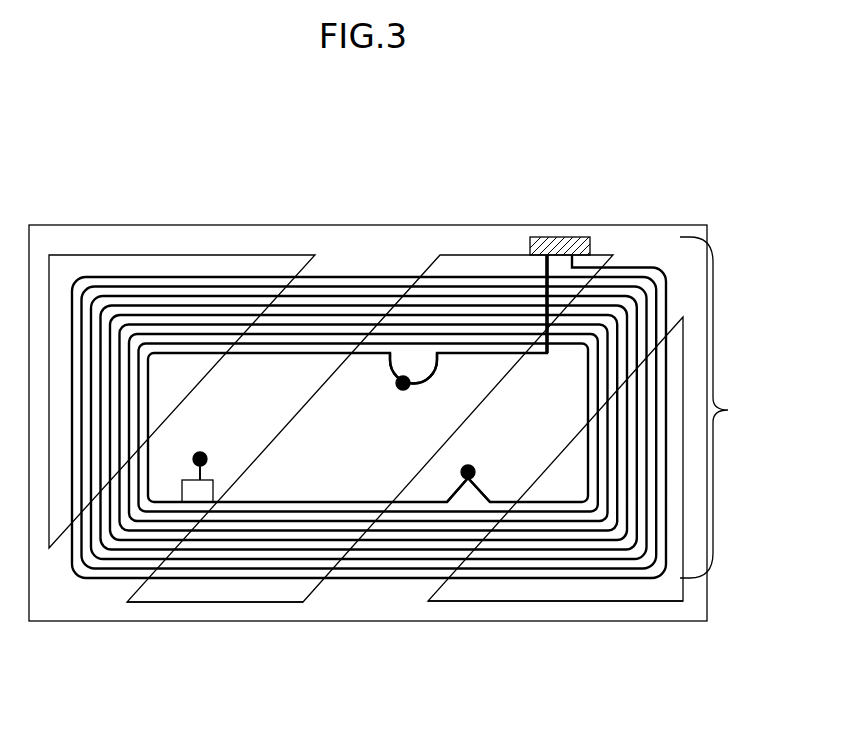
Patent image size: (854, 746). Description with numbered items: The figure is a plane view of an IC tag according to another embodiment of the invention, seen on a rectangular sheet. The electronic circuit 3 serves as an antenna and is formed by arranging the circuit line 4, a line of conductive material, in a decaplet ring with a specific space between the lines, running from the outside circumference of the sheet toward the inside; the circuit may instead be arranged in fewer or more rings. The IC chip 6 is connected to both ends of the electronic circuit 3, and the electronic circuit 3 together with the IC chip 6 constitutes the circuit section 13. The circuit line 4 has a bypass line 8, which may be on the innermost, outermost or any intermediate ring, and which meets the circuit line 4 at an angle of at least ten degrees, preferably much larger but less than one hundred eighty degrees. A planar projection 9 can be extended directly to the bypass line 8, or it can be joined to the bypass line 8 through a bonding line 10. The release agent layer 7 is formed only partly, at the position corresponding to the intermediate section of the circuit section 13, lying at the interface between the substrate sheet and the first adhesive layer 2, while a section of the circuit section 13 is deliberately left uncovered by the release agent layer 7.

The first adhesive layer 2 is at (360, 263).
The electronic circuit 3 is at (352, 583).
The circuit line 4 is at (315, 355).
The IC chip 6 is at (565, 237).
The release agent layer 7 is at (170, 372).
The bypass line 8 is at (215, 488).
The planar projection 9 is at (200, 450).
The bonding line 10 is at (193, 480).
The circuit section 13 is at (724, 407).